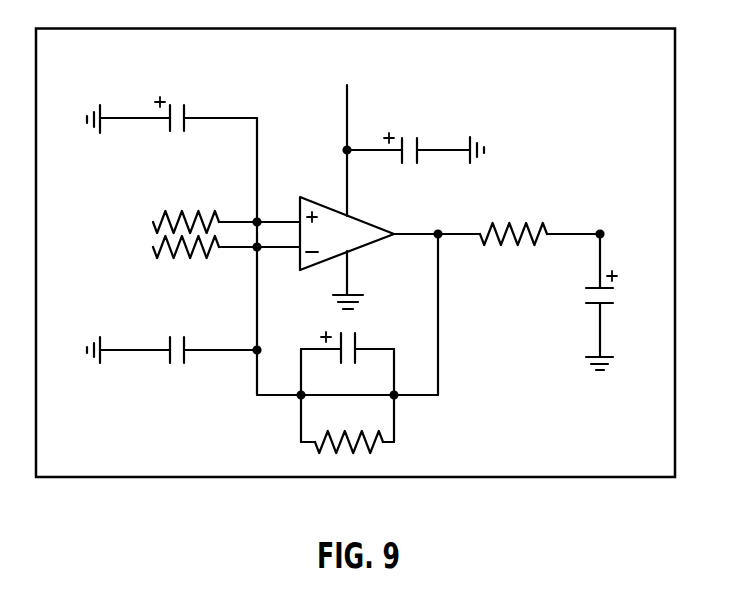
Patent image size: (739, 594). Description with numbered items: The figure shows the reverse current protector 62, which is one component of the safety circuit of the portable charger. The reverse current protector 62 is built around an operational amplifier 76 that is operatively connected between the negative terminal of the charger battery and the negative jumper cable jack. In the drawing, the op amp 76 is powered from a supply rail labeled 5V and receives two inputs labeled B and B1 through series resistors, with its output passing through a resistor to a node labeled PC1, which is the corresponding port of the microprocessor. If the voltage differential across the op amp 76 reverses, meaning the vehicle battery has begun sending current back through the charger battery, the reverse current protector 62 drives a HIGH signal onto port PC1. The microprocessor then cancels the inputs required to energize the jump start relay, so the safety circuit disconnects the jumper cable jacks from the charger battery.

The reverse current protector 62 is at (362, 255).
The operational amplifier 76 is at (366, 258).
The +5V supply rail 5V is at (368, 85).
The port PC1 is at (657, 234).
The B- input B is at (153, 222).
The B1- input B1 is at (153, 247).